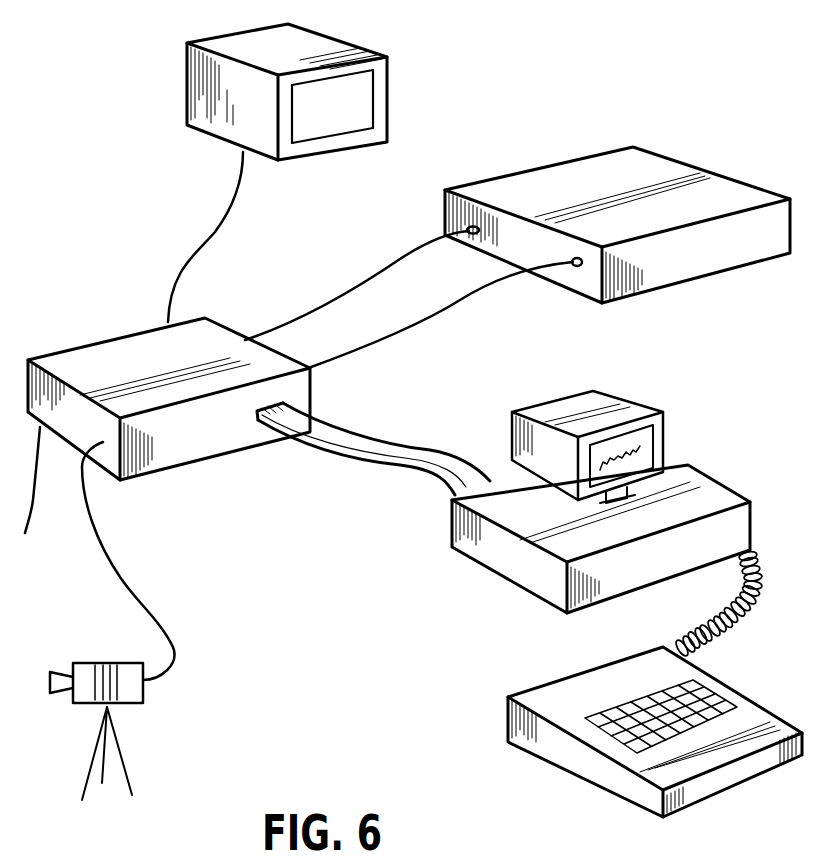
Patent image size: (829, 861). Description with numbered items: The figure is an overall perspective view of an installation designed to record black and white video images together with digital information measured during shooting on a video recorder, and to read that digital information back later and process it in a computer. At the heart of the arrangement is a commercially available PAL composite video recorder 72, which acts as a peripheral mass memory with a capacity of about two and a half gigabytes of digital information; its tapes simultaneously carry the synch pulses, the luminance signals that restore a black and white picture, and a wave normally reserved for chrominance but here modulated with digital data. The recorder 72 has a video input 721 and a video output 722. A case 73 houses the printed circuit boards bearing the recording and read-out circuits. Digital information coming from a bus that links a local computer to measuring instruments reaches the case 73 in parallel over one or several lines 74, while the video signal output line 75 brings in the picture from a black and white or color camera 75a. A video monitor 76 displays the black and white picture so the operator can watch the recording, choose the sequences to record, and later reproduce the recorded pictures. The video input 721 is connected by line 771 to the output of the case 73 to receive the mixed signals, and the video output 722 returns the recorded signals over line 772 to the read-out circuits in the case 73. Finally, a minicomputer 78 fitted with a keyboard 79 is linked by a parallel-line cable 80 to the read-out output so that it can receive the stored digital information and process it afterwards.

The composite video recorder 72 is at (540, 178).
The video input 721 is at (450, 222).
The video output 722 is at (577, 268).
The case 73 is at (168, 443).
The lines 74 is at (37, 497).
The video signal output line 75 is at (143, 592).
The camera 75a is at (127, 693).
The video monitor 76 is at (357, 98).
The line 771 is at (367, 283).
The line 772 is at (430, 327).
The minicomputer 78 is at (692, 487).
The keyboard 79 is at (727, 692).
The parallel-line cable 80 is at (337, 447).